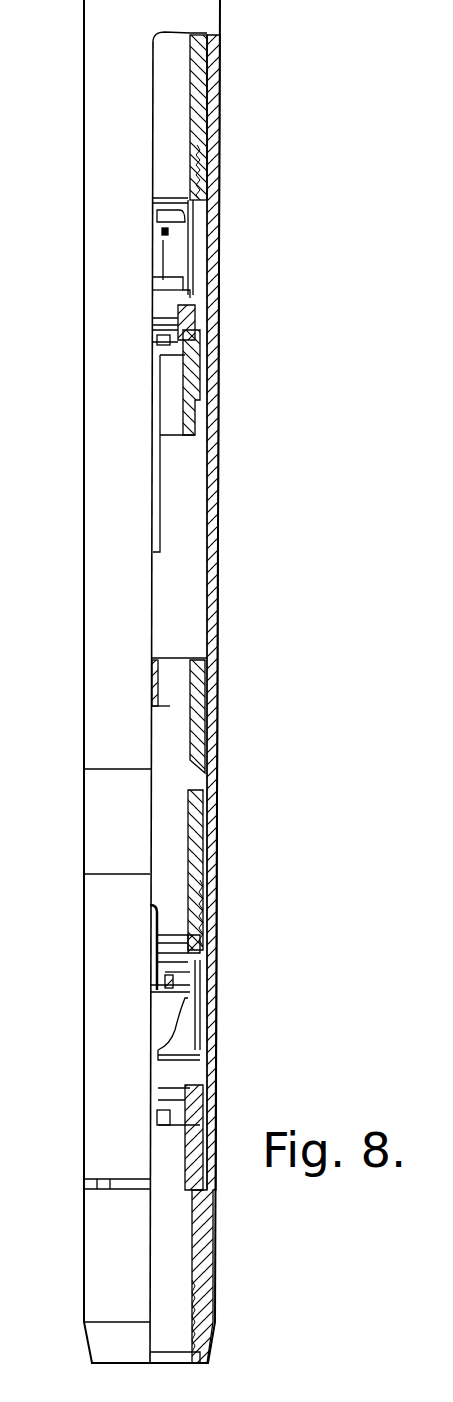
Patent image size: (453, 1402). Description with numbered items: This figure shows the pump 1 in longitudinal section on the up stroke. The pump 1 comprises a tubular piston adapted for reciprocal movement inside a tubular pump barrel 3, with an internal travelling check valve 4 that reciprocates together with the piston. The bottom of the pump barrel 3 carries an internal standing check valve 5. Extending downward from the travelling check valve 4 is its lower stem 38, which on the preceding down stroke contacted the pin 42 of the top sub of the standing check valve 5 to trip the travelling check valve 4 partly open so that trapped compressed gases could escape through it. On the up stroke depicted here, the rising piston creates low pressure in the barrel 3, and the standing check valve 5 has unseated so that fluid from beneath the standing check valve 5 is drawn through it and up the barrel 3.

The pump 1 is at (290, 0).
The pump barrel 3 is at (221, 446).
The travelling check valve 4 is at (167, 295).
The standing check valve 5 is at (175, 1012).
The lower stem 38 is at (157, 520).
The pin 42 is at (150, 672).